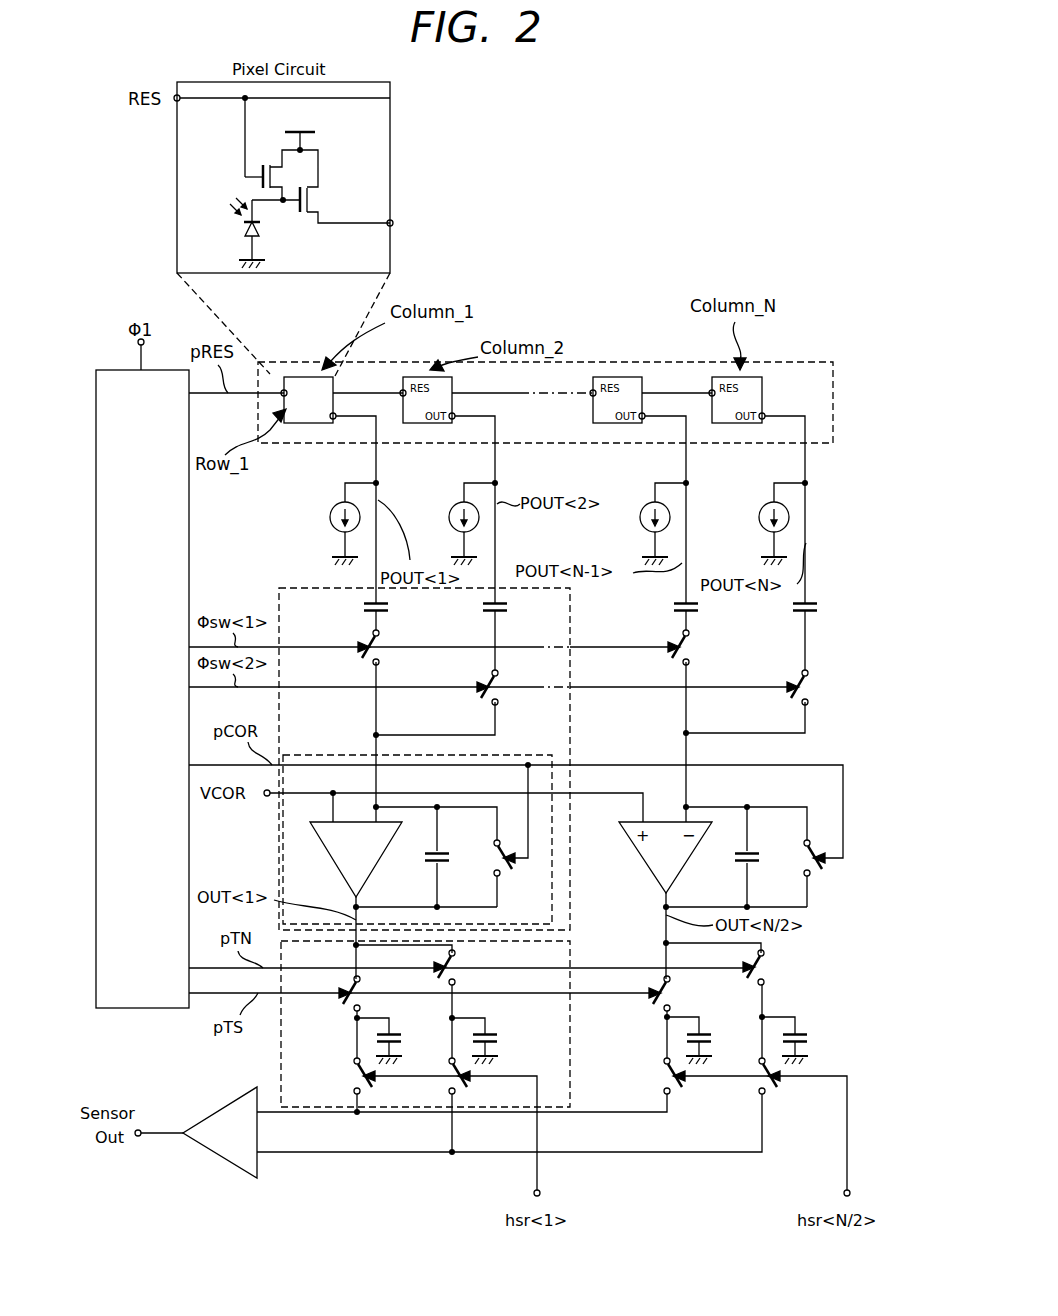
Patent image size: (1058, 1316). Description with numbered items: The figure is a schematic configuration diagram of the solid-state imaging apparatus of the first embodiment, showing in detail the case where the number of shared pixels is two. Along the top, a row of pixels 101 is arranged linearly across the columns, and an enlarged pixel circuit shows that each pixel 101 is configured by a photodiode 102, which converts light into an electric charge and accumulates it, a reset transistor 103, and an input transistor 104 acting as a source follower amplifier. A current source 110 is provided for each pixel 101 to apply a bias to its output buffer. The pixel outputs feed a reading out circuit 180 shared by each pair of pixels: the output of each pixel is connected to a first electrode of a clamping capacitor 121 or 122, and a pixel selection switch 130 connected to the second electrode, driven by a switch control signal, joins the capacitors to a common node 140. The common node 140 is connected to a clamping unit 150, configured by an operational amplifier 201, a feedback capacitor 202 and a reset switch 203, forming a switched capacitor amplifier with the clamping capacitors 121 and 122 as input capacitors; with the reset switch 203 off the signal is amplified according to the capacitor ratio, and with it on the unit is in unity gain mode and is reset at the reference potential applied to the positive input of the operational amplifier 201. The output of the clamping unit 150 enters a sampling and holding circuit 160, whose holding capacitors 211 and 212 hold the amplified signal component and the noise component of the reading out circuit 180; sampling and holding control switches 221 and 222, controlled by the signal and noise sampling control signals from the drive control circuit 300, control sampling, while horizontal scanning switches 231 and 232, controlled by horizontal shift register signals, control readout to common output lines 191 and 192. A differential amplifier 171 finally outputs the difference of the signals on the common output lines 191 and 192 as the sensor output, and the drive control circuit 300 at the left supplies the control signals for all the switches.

The pixel 101 is at (336, 381).
The photodiode 102 is at (245, 237).
The reset transistor 103 is at (262, 185).
The input transistor 104 is at (305, 216).
The current source 110 is at (330, 517).
The clamping capacitor 121 is at (365, 607).
The clamping capacitor 122 is at (483, 607).
The pixel selection switch 130 is at (367, 634).
The common node 140 is at (376, 735).
The clamping unit 150 is at (520, 755).
The sampling and holding circuit 160 is at (570, 1040).
The differential amplifier 171 is at (220, 1105).
The reading out circuit 180 is at (570, 879).
The common output line 191 is at (325, 1113).
The common output line 192 is at (355, 1150).
The operational amplifier 201 is at (375, 872).
The feedback capacitor 202 is at (450, 856).
The reset switch 203 is at (512, 877).
The holding capacitor 211 is at (395, 1030).
The holding capacitor 212 is at (495, 1030).
The sampling and holding control switch 221 is at (350, 1005).
The sampling and holding control switch 222 is at (456, 957).
The horizontal scanning switch 231 is at (352, 1082).
The horizontal scanning switch 232 is at (470, 1090).
The drive control circuit 300 is at (97, 370).